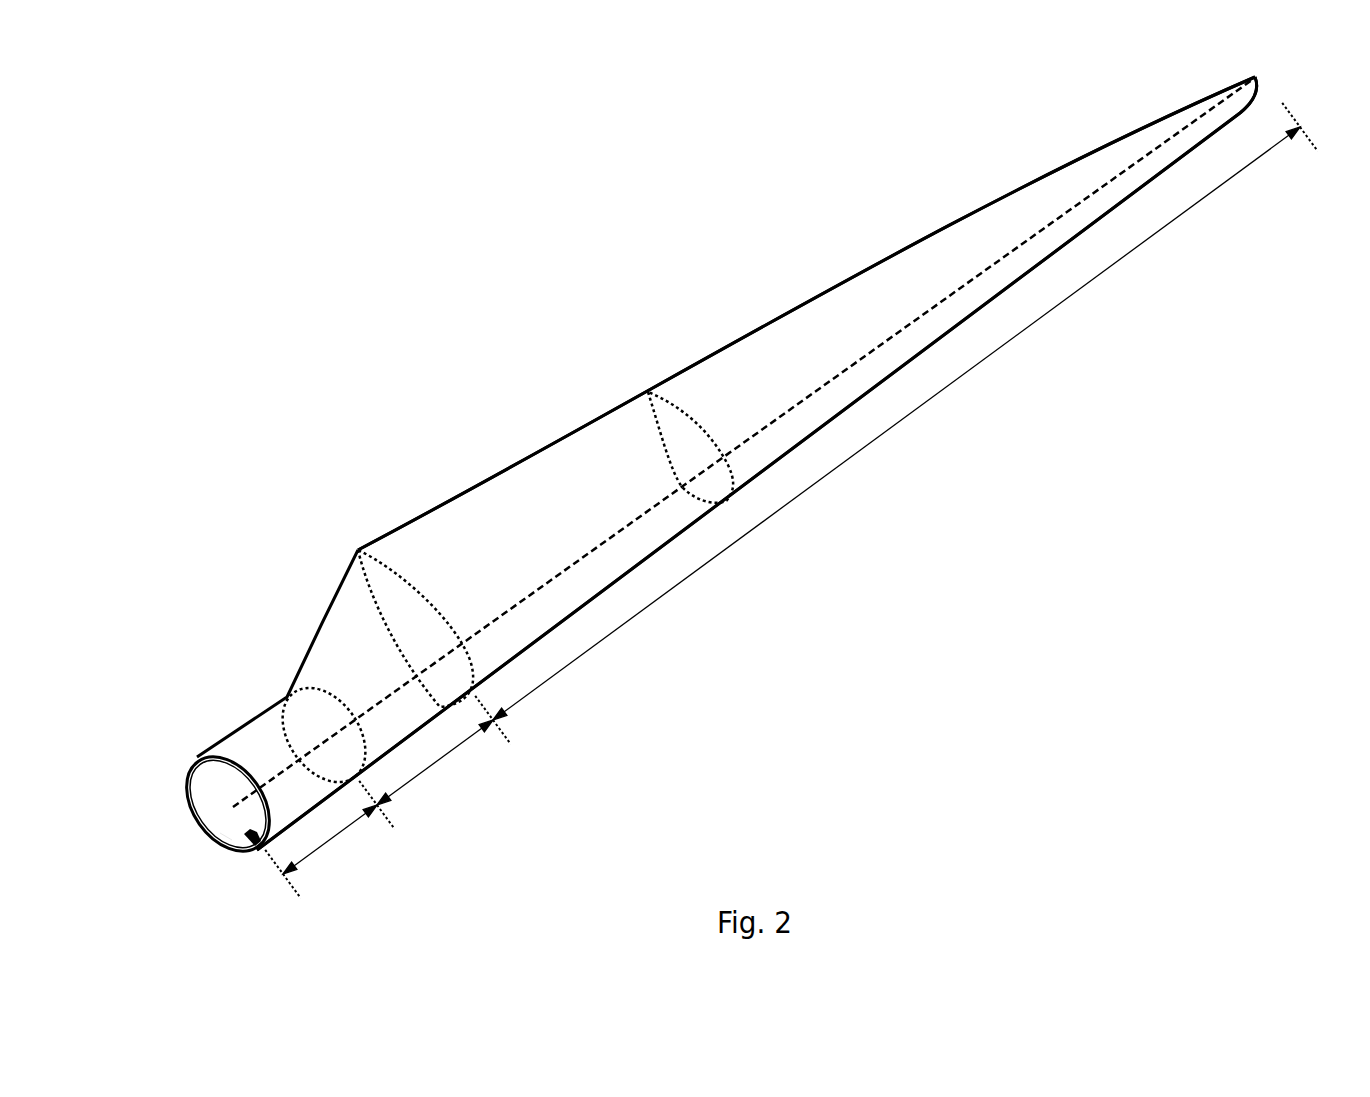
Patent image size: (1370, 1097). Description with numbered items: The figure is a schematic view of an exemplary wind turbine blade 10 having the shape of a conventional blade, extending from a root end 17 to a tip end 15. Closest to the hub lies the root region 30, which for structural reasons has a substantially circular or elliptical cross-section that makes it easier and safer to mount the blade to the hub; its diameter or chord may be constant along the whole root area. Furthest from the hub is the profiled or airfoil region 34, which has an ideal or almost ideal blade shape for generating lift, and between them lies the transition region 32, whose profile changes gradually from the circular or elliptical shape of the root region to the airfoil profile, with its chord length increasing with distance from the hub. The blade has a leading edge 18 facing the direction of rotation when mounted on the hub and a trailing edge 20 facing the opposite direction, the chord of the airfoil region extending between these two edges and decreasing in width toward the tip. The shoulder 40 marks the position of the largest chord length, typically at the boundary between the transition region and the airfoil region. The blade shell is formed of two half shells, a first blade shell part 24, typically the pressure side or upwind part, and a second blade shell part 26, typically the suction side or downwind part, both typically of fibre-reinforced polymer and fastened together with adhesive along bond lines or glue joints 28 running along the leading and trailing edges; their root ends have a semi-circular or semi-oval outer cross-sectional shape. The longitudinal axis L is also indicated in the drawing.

The wind turbine blade 10 is at (528, 315).
The tip end 15 is at (1255, 77).
The root end 17 is at (207, 773).
The leading edge 18 is at (933, 347).
The trailing edge 20 is at (817, 302).
The first blade shell part 24 is at (217, 758).
The second blade shell part 26 is at (220, 833).
The bond lines or glue joints 28 is at (195, 762).
The root region 30 is at (335, 837).
The transition region 32 is at (438, 760).
The airfoil region 34 is at (816, 485).
The shoulder 40 is at (358, 550).
The longitudinal axis L is at (240, 802).